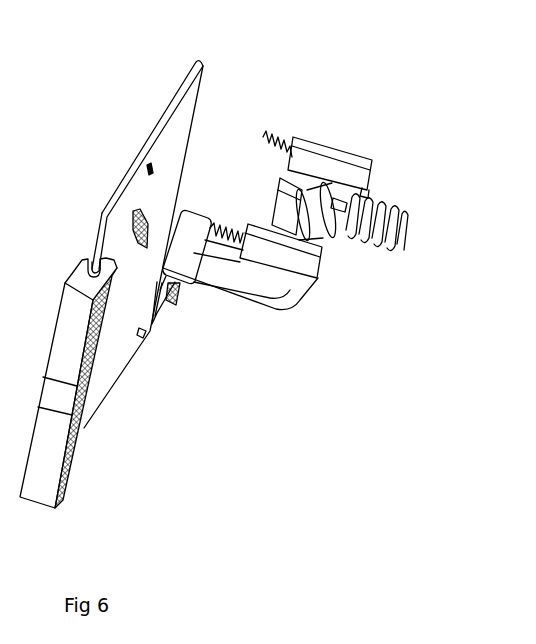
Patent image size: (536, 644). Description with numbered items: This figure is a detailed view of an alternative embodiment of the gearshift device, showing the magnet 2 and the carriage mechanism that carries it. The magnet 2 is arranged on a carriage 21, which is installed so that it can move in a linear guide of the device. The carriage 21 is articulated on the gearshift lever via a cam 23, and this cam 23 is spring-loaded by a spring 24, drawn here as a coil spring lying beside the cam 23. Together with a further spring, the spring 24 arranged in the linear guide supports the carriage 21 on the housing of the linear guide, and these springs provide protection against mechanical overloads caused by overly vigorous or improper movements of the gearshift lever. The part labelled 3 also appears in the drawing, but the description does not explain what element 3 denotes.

The magnet 2 is at (195, 218).
The mounting plate 3 is at (143, 217).
The carriage 21 is at (315, 163).
The cam 23 is at (316, 232).
The spring 24 is at (378, 213).